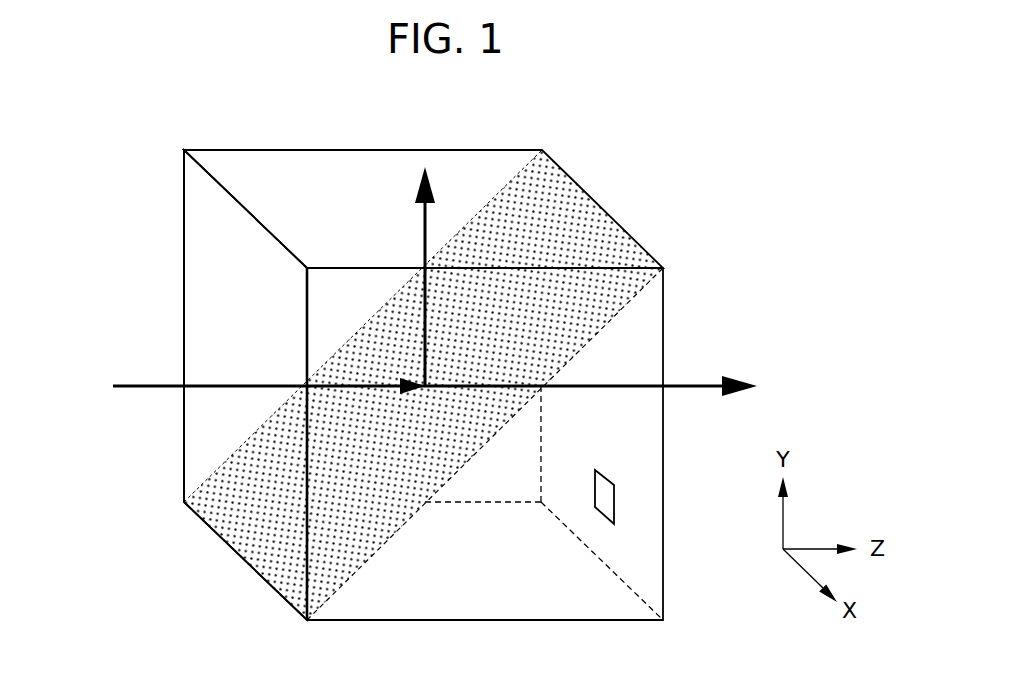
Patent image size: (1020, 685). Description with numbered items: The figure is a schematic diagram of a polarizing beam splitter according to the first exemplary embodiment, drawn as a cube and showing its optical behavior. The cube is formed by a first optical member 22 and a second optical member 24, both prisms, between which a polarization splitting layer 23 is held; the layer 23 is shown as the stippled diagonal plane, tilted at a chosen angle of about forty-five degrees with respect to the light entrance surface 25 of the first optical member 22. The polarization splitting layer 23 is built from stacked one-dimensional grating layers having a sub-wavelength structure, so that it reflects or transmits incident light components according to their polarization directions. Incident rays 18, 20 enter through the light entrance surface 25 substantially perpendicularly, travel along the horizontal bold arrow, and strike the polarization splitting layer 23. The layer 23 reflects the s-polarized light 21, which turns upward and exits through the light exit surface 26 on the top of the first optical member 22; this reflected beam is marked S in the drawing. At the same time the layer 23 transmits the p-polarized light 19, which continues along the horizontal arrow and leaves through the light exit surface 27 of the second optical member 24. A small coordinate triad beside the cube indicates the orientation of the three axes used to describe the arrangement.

The ray 18 is at (258, 351).
The ray 20 is at (140, 383).
The p-polarized light 19 is at (680, 383).
The s-polarized light 21 is at (422, 226).
The first optical member 22 is at (255, 298).
The polarization splitting layer 23 is at (230, 531).
The second optical member 24 is at (463, 591).
The light entrance surface 25 is at (188, 435).
The light exit surface 26 is at (313, 155).
The light exit surface 27 is at (614, 500).
The S-polarized light S is at (430, 182).